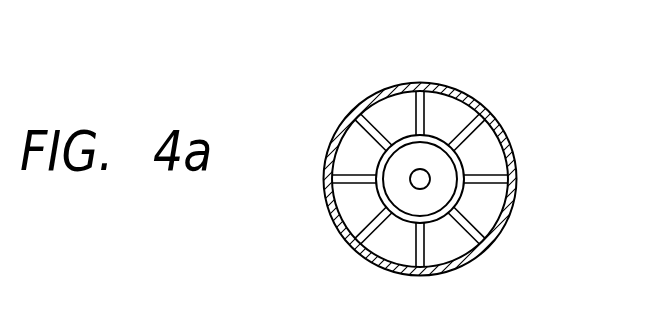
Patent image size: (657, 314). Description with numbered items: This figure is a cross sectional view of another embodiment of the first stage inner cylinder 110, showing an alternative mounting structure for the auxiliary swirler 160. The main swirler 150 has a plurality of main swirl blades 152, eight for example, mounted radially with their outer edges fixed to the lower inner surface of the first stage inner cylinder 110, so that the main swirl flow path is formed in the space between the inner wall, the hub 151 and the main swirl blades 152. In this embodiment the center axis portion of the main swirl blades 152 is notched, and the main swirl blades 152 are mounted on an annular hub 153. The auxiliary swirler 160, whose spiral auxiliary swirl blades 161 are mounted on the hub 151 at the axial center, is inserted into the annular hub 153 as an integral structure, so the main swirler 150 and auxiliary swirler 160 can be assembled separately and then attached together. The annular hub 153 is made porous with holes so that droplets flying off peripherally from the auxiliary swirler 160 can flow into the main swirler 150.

The first stage inner cylinder 110 is at (513, 152).
The hub 151 is at (413, 185).
The main swirl blade 152 is at (445, 135).
The main swirler 150 is at (437, 149).
The annular hub 153 is at (462, 188).
The auxiliary swirl blade 161 is at (430, 184).
The auxiliary swirler 160 is at (506, 237).